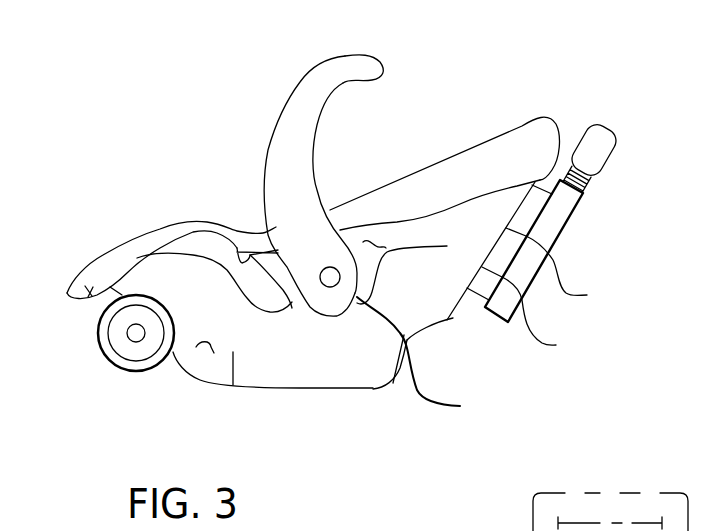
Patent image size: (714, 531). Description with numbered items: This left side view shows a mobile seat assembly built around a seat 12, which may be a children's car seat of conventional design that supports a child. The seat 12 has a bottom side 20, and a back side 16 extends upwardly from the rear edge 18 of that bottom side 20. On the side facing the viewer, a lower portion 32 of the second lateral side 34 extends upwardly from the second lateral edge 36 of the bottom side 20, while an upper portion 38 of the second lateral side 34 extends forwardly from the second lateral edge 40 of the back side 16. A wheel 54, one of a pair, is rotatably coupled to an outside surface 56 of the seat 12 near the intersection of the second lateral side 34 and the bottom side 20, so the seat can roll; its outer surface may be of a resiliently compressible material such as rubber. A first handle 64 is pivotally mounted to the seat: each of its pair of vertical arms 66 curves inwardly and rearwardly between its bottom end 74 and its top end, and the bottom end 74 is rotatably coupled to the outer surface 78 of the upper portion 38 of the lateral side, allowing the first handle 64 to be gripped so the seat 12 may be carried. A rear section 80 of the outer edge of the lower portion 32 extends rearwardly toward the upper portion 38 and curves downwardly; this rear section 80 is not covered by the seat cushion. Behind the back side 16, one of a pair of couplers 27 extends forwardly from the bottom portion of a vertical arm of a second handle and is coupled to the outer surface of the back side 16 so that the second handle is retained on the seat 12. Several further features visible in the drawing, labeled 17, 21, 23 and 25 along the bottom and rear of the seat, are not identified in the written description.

The seat 12 is at (447, 363).
The back side 16 is at (565, 268).
The base panel 17 is at (260, 389).
The rear edge 18 is at (445, 320).
The bottom side 20 is at (327, 389).
The base edge 21 is at (373, 389).
The base member 23 is at (347, 389).
The rear shelf 25 is at (400, 383).
The coupler 27 is at (543, 180).
The lower portion of second lateral side 32 is at (165, 284).
The second lateral side 34 is at (233, 385).
The second lateral edge of bottom side 36 is at (288, 389).
The upper portion of second lateral side 38 is at (483, 211).
The second lateral edge of back side 40 is at (538, 312).
The wheel 54 is at (104, 338).
The outside surface 56 is at (185, 355).
The first handle 64 is at (347, 54).
The vertical arm 66 is at (310, 160).
The bottom end 74 is at (427, 359).
The outer surface 78 is at (373, 237).
The rear section of outer edge 80 is at (220, 247).